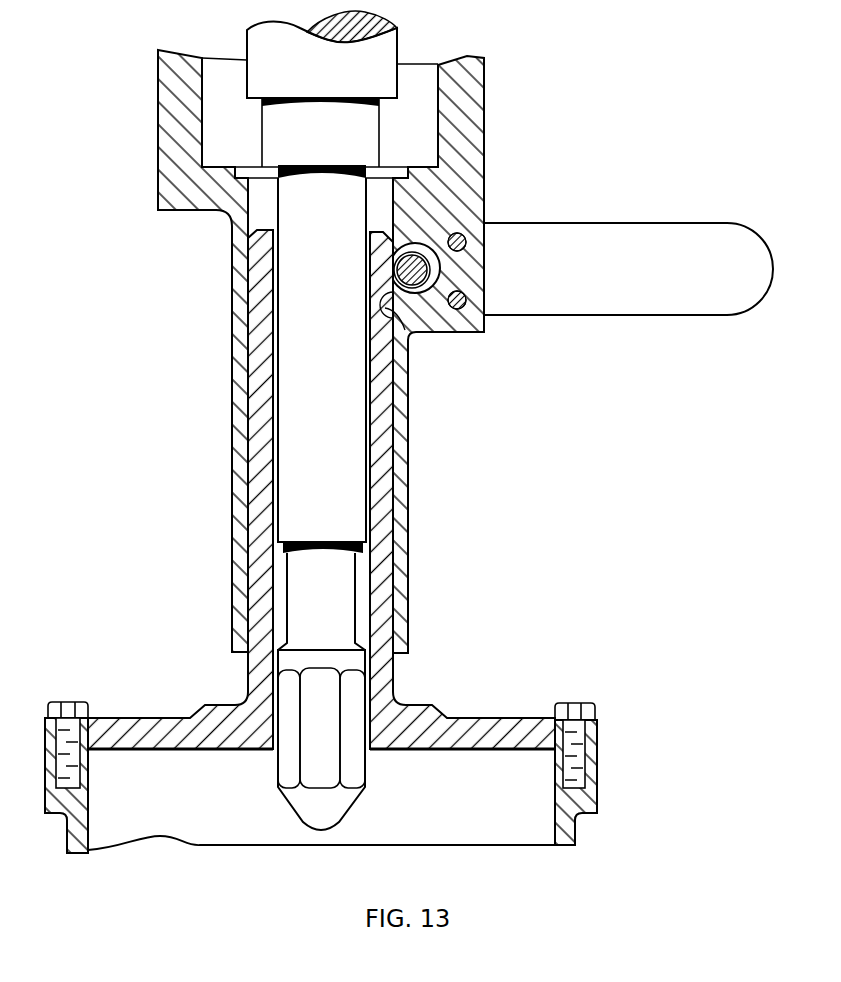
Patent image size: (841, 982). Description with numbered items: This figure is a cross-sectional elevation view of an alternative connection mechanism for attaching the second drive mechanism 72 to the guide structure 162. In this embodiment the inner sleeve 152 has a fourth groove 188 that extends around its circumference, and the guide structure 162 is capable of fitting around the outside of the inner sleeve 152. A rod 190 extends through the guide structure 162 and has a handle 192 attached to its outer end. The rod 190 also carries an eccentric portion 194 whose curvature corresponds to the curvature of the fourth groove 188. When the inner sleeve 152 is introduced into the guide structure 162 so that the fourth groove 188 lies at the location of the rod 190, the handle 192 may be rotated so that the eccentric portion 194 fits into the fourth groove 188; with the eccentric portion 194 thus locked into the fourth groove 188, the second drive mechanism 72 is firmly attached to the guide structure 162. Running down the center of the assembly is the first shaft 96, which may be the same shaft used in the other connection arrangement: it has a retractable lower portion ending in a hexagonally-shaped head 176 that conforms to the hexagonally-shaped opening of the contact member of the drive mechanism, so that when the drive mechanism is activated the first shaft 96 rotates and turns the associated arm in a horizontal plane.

The second drive mechanism 72 is at (605, 811).
The first shaft 96 is at (331, 418).
The inner sleeve 152 is at (210, 725).
The guide structure 162 is at (232, 447).
The hexagonally-shaped head 176 is at (325, 767).
The fourth groove 188 is at (415, 328).
The rod 190 is at (407, 268).
The handle 192 is at (576, 243).
The eccentric portion 194 is at (435, 272).